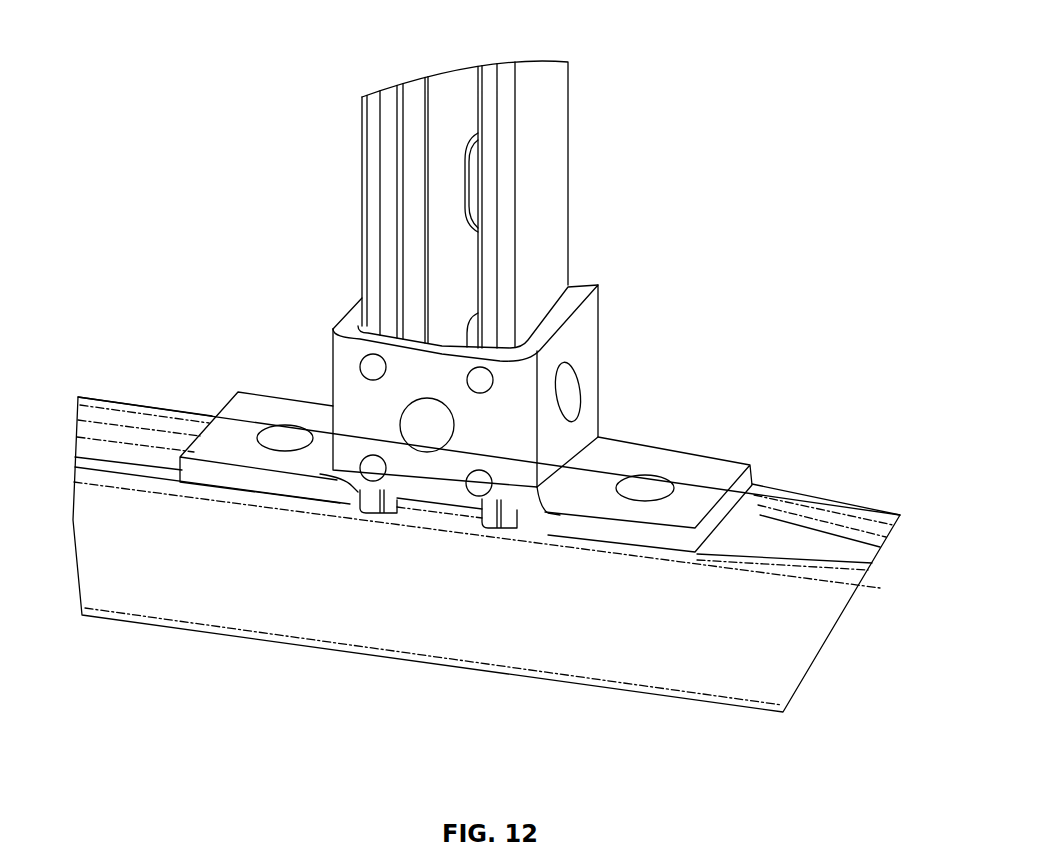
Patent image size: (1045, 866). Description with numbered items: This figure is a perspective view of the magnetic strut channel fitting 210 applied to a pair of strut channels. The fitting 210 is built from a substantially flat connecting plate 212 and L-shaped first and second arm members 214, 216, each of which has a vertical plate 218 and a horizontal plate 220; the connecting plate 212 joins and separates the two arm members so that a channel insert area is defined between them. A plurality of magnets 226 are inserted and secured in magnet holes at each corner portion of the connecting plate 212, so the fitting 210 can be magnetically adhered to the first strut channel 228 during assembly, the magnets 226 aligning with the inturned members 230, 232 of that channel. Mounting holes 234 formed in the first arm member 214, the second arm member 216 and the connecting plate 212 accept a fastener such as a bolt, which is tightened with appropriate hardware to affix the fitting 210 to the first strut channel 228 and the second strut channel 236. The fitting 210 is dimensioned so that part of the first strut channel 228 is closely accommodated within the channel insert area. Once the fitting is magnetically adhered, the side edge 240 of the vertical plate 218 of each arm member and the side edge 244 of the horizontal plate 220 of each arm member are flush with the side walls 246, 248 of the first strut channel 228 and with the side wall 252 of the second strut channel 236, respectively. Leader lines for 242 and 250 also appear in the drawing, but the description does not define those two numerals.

The magnetic strut channel fitting 210 is at (474, 483).
The connecting plate 212 is at (445, 480).
The first arm member 214 is at (232, 453).
The second arm member 216 is at (626, 442).
The vertical plate 218 is at (583, 315).
The horizontal plate 220 is at (212, 443).
The magnets 226 is at (481, 380).
The first strut channel 228 is at (467, 179).
The inturned member 230 is at (392, 223).
The inturned member 232 is at (490, 88).
The mounting holes 234 is at (420, 437).
The second strut channel 236 is at (525, 650).
The side edge 240 is at (600, 345).
The plate front face 242 is at (290, 488).
The side edge 244 is at (275, 395).
The side wall 246 is at (538, 185).
The side wall 248 is at (447, 143).
The rail 250 is at (757, 680).
The side wall 252 is at (818, 505).